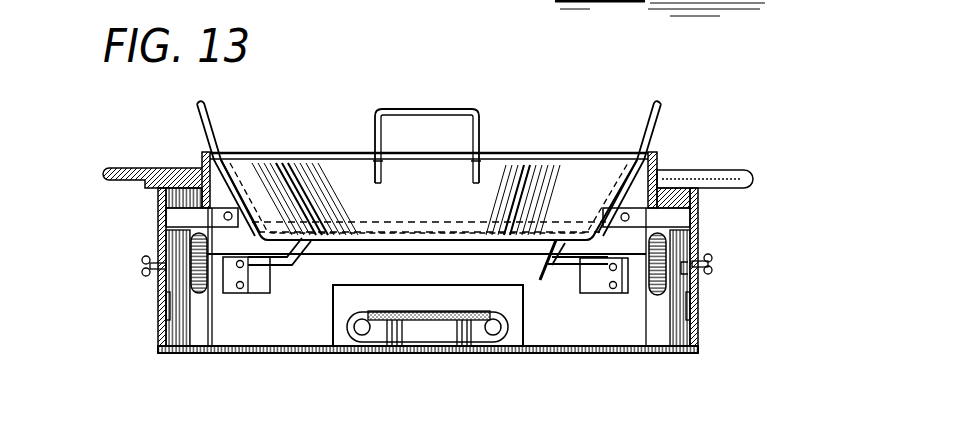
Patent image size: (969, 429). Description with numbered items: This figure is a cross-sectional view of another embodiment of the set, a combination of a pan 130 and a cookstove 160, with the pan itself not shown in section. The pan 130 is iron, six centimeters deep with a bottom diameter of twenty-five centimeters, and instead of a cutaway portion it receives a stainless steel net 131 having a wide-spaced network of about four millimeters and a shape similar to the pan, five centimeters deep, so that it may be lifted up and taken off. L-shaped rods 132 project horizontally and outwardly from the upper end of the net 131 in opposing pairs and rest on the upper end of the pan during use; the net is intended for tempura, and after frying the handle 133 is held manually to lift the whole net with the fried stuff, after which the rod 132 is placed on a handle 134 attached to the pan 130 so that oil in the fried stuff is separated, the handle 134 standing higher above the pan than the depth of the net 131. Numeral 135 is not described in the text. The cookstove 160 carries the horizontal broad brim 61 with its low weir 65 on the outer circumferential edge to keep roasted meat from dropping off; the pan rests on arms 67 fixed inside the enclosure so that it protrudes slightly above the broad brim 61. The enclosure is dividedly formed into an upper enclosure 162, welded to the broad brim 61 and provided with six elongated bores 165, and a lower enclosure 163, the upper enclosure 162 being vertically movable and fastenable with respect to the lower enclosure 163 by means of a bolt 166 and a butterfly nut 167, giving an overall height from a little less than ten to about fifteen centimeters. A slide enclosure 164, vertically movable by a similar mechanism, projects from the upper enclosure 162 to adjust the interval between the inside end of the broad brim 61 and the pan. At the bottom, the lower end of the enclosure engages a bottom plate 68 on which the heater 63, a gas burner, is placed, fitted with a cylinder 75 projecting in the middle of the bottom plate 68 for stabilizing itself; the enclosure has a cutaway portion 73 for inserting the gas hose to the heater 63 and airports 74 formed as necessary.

The broad brim 61 is at (738, 173).
The heater 63 is at (514, 258).
The low weir 65 is at (102, 168).
The arms 67 is at (283, 275).
The bottom plate 68 is at (340, 352).
The cutaway portion 73 is at (433, 292).
The airports 74 is at (195, 243).
The cylinder 75 is at (486, 345).
The pan 130 is at (521, 104).
The stainless steel net 131 is at (347, 220).
The L-shaped rods 132 is at (468, 172).
The handle 133 is at (431, 108).
The handle 134 is at (211, 128).
The liner 135 is at (589, 143).
The cookstove 160 is at (731, 157).
The upper enclosure 162 is at (700, 213).
The lower enclosure 163 is at (185, 352).
The slide enclosure 164 is at (660, 170).
The elongated bores 165 is at (697, 244).
The bolt 166 is at (155, 298).
The butterfly nut 167 is at (141, 262).